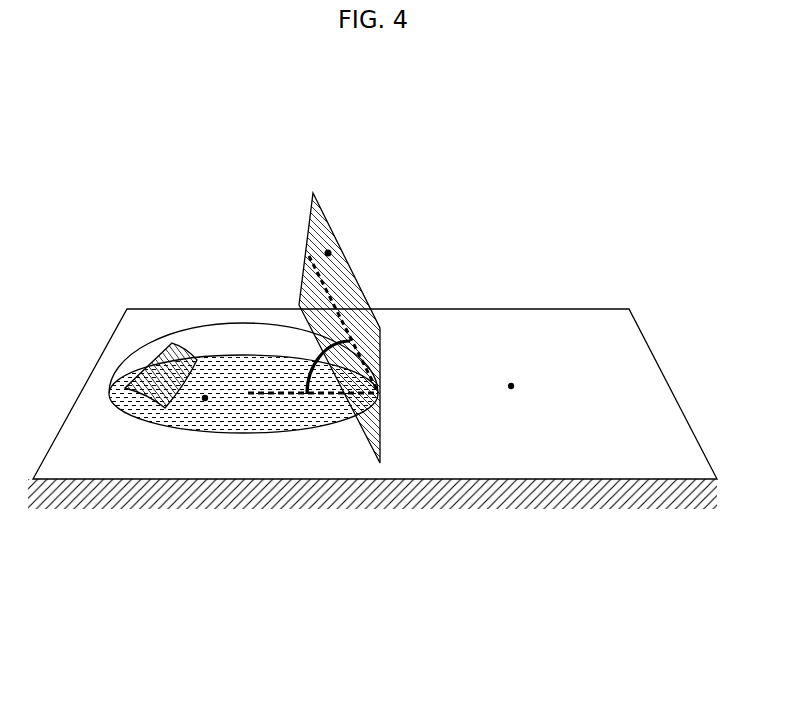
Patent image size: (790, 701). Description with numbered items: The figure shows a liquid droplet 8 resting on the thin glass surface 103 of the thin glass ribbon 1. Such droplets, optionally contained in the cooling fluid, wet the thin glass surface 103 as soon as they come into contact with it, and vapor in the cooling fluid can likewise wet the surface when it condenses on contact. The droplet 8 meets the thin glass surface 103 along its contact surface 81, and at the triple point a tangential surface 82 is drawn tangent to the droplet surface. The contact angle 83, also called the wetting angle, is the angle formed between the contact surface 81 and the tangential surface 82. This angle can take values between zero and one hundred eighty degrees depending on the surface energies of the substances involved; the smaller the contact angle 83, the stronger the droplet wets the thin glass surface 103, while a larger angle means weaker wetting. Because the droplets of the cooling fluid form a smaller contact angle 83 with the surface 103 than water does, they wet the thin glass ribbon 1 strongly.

The thin glass ribbon 1 is at (507, 493).
The liquid droplet 8 is at (213, 323).
The contact surface 81 is at (205, 398).
The tangential surface 82 is at (328, 253).
The contact angle 83 is at (317, 337).
The thin glass surface 103 is at (511, 386).